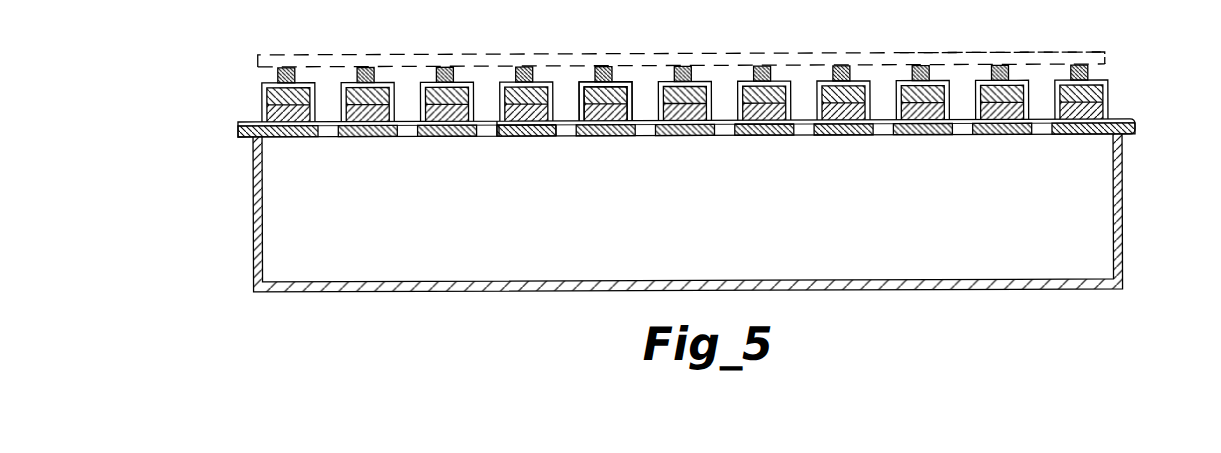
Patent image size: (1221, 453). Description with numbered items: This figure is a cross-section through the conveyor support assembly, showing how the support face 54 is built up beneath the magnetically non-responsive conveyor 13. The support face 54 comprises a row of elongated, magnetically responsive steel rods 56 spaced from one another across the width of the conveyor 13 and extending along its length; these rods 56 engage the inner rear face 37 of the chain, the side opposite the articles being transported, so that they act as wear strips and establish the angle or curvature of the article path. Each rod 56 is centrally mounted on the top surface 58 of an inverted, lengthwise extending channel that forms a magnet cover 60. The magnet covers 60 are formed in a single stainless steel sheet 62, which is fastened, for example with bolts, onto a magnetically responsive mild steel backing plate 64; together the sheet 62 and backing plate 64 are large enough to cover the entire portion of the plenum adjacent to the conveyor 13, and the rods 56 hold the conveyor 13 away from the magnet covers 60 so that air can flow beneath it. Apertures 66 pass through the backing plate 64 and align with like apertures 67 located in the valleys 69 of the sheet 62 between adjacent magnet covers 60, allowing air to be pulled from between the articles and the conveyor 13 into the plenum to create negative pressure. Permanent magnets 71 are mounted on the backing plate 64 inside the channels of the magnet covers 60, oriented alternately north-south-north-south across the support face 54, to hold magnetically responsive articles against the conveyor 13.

The conveyor 13 is at (935, 13).
The inner rear face 37 is at (812, 78).
The support face 54 is at (262, 96).
The rods 56 is at (448, 69).
The top surface 58 is at (595, 82).
The magnet covers 60 is at (638, 96).
The sheet 62 is at (1124, 123).
The backing plate 64 is at (370, 142).
The apertures 66 is at (508, 138).
The apertures 67 is at (494, 138).
The valleys 69 is at (553, 138).
The magnets 71 is at (766, 138).